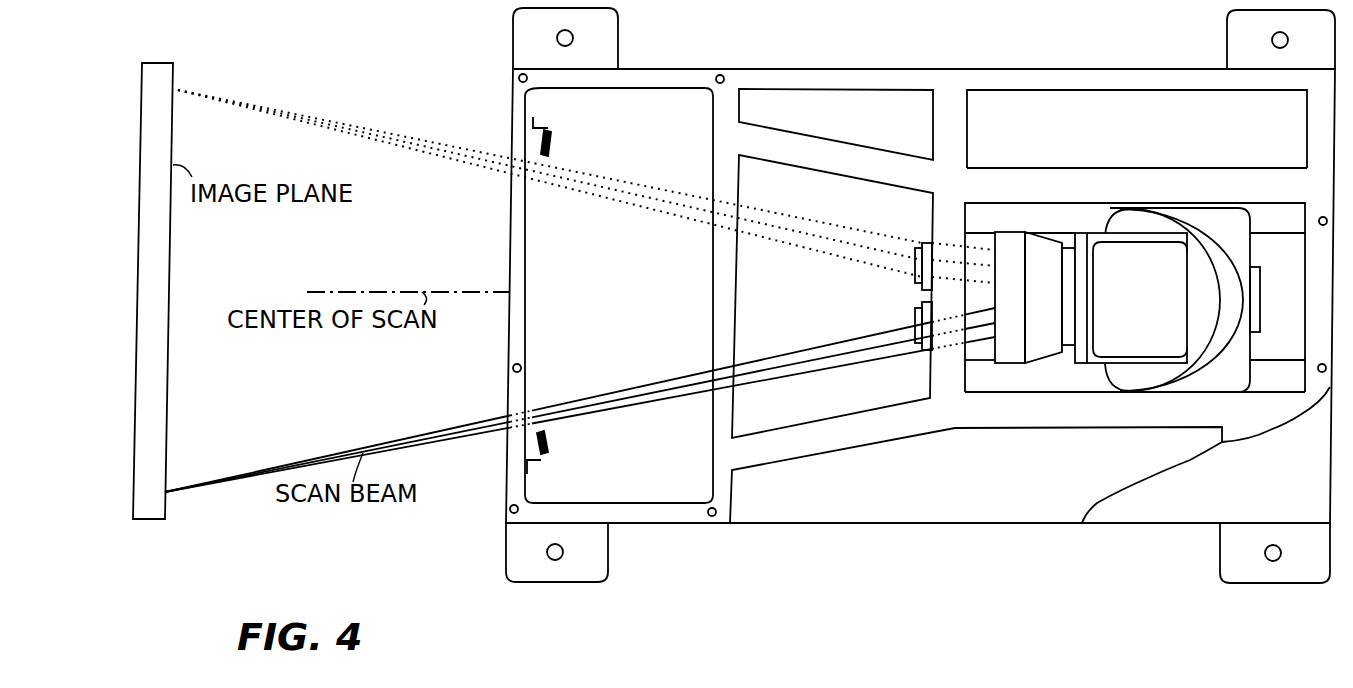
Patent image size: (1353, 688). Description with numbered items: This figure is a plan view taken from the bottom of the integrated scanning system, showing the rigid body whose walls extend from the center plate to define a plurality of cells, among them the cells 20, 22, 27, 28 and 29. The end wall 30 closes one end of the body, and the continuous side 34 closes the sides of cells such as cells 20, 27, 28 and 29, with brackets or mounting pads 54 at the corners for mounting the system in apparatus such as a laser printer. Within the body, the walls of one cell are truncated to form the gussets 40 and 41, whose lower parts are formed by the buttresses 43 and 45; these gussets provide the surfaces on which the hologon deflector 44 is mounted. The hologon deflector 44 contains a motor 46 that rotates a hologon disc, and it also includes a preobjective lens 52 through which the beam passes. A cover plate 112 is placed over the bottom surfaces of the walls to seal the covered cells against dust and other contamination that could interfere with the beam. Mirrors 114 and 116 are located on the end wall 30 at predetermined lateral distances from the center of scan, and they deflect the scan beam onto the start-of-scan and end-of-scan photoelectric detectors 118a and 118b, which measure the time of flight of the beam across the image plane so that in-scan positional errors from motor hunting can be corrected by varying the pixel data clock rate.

The cell 20 is at (641, 480).
The cell 22 is at (848, 400).
The cell 27 is at (879, 132).
The cell 28 is at (1009, 132).
The cell 29 is at (854, 492).
The end wall 30 is at (512, 122).
The side 34 is at (818, 69).
The gusset 40 is at (1280, 213).
The gusset 41 is at (1268, 384).
The buttress 43 is at (1120, 420).
The hologon deflector 44 is at (1103, 237).
The buttress 45 is at (1208, 172).
The motor 46 is at (1262, 287).
The preobjective lens 52 is at (1013, 363).
The mounting pad 54 is at (618, 33).
The cover plate 112 is at (1191, 459).
The mirror 114 is at (553, 142).
The mirror 116 is at (549, 440).
The photoelectric detector 118a is at (918, 262).
The photoelectric detector 118b is at (915, 316).